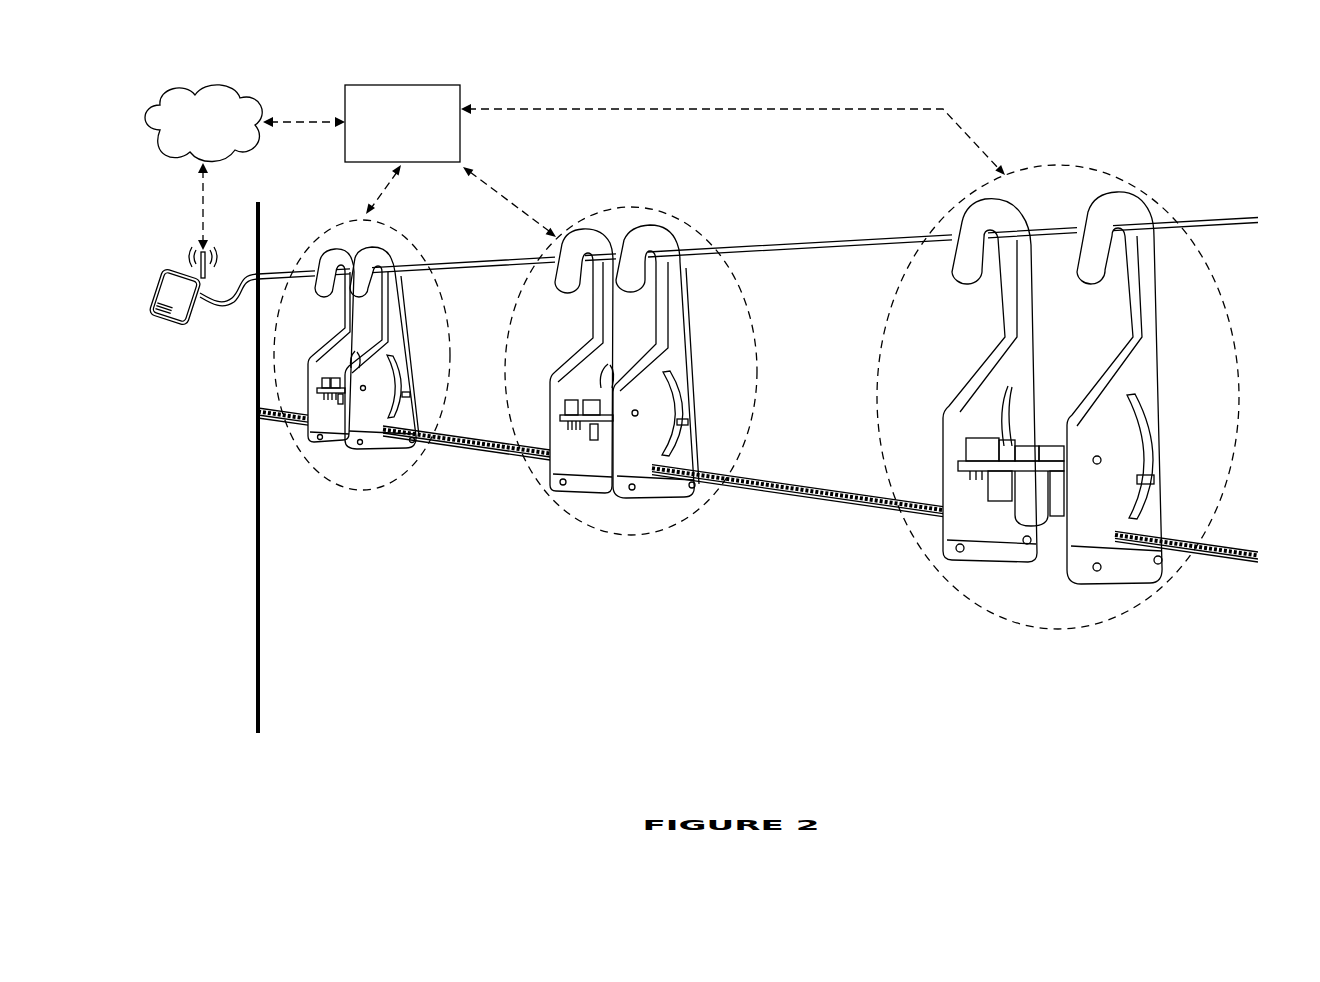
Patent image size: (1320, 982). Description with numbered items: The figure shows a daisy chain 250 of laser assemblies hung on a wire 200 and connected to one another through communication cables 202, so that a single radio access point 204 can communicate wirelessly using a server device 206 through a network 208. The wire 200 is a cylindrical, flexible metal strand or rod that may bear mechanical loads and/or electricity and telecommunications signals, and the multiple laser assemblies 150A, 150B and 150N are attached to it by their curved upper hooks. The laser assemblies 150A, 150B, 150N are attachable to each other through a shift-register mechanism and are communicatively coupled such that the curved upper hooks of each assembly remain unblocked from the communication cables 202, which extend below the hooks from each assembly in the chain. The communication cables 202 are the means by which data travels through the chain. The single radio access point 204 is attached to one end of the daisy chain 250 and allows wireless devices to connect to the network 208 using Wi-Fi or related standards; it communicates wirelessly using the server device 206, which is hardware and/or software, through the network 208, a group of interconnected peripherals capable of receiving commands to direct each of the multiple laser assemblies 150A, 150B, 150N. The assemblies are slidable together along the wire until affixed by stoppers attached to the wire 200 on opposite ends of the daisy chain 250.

The laser assembly 150A is at (352, 490).
The laser assembly 150B is at (620, 208).
The laser assembly 150N is at (1068, 163).
The wire 200 is at (838, 238).
The communication cables 202 is at (792, 490).
The single radio access point 204 is at (176, 325).
The server device 206 is at (402, 123).
The network 208 is at (203, 123).
The daisy chain 250 is at (250, 758).